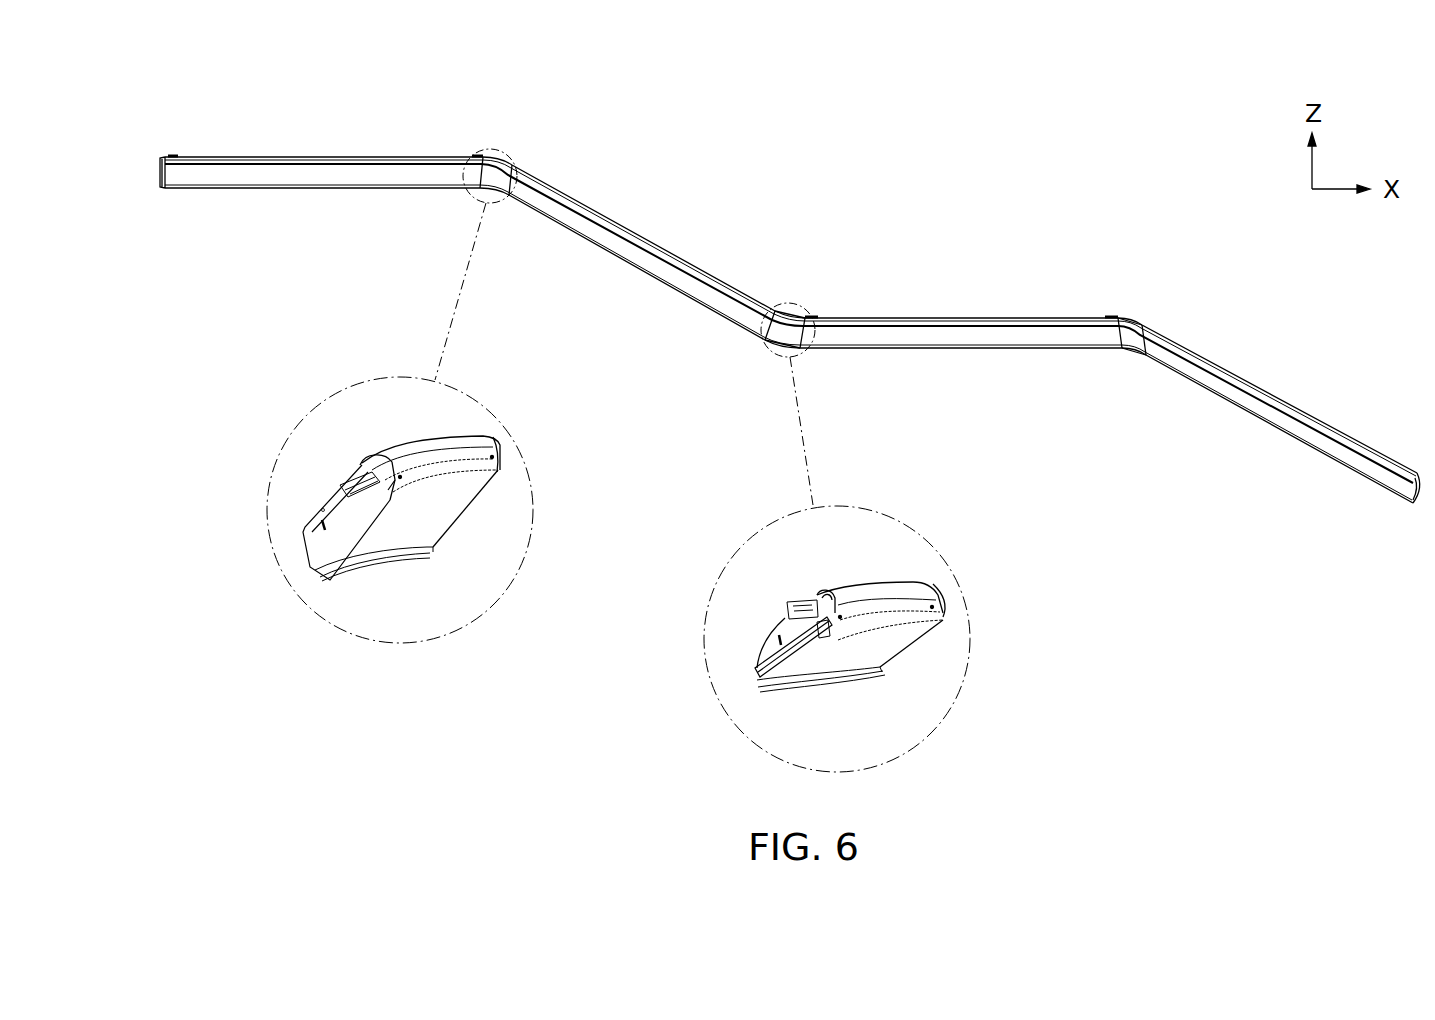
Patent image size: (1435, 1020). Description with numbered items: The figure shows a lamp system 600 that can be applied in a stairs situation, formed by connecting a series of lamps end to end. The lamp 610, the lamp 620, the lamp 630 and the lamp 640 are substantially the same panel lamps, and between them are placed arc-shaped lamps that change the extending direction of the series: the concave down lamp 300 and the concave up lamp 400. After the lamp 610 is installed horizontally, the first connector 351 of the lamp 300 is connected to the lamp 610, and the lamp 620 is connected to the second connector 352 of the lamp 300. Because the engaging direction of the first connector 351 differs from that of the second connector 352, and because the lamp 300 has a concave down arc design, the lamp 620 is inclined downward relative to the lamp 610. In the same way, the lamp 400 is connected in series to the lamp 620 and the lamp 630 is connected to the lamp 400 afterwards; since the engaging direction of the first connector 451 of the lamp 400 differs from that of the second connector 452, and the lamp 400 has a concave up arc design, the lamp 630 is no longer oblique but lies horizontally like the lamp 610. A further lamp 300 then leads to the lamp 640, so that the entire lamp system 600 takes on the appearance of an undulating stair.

The lamp system 600 is at (767, 279).
The lamp 610 is at (326, 146).
The lamp 620 is at (603, 196).
The lamp 630 is at (952, 300).
The lamp 640 is at (1270, 376).
The lamp 300 is at (755, 438).
The first connector 351 is at (358, 480).
The second connector 352 is at (500, 470).
The lamp 400 is at (871, 532).
The first connector 451 is at (805, 603).
The second connector 452 is at (945, 614).